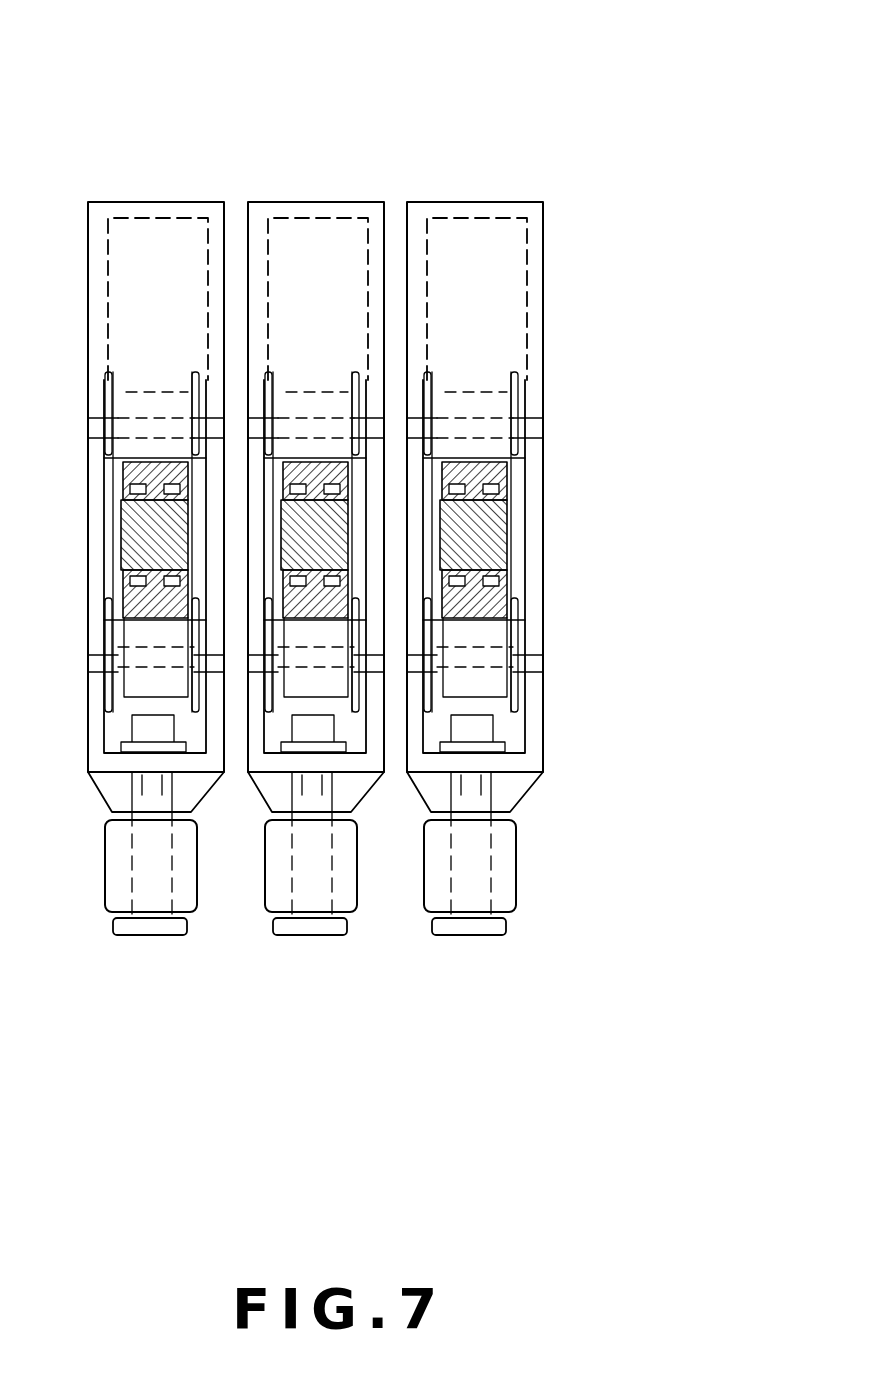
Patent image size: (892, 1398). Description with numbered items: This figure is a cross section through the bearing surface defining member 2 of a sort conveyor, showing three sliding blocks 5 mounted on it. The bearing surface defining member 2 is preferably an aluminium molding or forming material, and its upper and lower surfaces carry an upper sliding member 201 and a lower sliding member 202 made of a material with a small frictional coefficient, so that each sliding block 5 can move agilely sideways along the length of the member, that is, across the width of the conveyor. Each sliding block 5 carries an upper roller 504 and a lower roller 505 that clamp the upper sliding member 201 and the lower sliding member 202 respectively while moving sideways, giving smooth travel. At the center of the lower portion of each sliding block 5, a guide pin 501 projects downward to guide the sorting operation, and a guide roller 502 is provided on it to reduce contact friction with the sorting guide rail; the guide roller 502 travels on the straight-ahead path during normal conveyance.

The sliding block 5 is at (569, 539).
The upper roller 504 is at (578, 402).
The upper sliding member 201 is at (587, 479).
The bearing surface defining member 2 is at (564, 535).
The lower sliding member 202 is at (587, 602).
The lower roller 505 is at (578, 671).
The guide roller 502 is at (568, 896).
The guide pin 501 is at (480, 997).